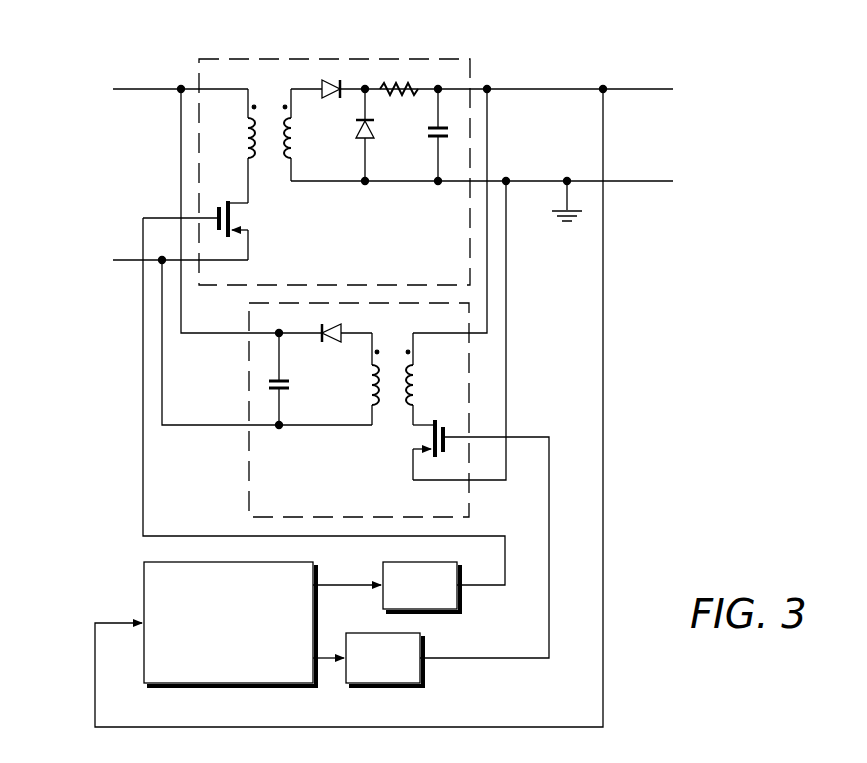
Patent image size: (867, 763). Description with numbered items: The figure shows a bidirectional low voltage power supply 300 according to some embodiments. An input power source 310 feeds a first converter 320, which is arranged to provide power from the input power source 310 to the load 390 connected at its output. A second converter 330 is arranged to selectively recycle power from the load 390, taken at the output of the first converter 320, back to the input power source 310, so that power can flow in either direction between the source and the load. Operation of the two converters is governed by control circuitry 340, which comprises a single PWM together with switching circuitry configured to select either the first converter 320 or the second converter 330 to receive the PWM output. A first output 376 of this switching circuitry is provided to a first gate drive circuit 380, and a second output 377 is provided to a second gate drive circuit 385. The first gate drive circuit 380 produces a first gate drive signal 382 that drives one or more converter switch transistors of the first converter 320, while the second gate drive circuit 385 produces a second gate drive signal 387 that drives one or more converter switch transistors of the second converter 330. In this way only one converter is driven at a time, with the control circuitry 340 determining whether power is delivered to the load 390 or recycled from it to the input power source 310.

The bidirectional low voltage power supply 300 is at (510, 55).
The input power source 310 is at (70, 118).
The first converter 320 is at (240, 57).
The second converter 330 is at (248, 386).
The control circuitry 340 is at (176, 685).
The first output 376 is at (333, 583).
The second output 377 is at (327, 665).
The first gate drive circuit 380 is at (448, 610).
The first gate drive signal 382 is at (505, 553).
The second gate drive circuit 385 is at (386, 685).
The second gate drive signal 387 is at (549, 510).
The load 390 is at (725, 118).